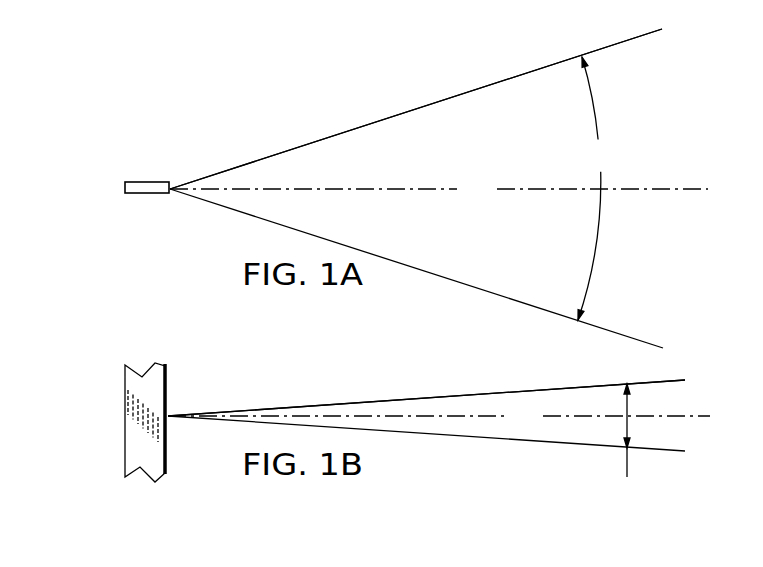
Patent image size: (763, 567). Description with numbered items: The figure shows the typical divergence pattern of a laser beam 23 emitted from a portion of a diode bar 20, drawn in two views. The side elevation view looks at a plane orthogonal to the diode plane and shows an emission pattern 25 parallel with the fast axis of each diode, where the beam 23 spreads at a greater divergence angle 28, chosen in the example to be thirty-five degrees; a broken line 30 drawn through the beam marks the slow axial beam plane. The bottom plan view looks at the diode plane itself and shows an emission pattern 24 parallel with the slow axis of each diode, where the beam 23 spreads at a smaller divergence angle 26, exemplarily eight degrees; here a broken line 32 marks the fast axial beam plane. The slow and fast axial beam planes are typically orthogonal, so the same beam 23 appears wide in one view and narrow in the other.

In FIG. 1A, the diode bar 20 is at (140, 182).
In FIG. 1B, the diode bar 20 is at (125, 418).
In FIG. 1A, the beam 23 is at (243, 158).
In FIG. 1B, the beam 23 is at (291, 400).
In FIG. 1B, the emission pattern 24 is at (408, 399).
In FIG. 1A, the emission pattern 25 is at (398, 115).
In FIG. 1B, the divergence angle 26 is at (618, 446).
In FIG. 1A, the divergence angle 28 is at (595, 188).
In FIG. 1A, the slow axial beam plane 30 is at (439, 190).
In FIG. 1B, the fast axial beam plane 32 is at (439, 416).